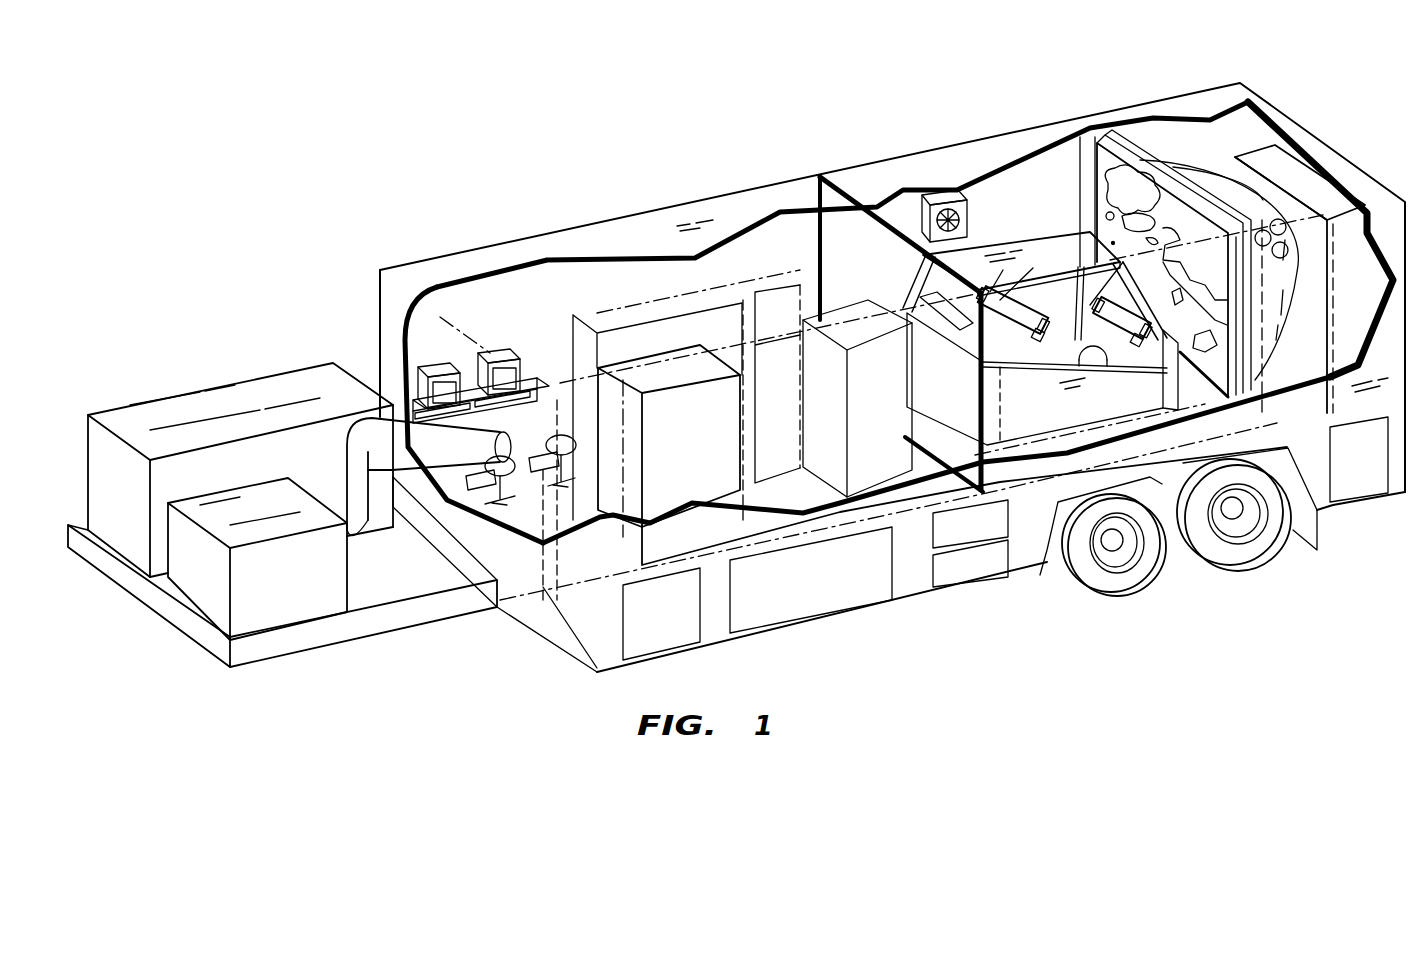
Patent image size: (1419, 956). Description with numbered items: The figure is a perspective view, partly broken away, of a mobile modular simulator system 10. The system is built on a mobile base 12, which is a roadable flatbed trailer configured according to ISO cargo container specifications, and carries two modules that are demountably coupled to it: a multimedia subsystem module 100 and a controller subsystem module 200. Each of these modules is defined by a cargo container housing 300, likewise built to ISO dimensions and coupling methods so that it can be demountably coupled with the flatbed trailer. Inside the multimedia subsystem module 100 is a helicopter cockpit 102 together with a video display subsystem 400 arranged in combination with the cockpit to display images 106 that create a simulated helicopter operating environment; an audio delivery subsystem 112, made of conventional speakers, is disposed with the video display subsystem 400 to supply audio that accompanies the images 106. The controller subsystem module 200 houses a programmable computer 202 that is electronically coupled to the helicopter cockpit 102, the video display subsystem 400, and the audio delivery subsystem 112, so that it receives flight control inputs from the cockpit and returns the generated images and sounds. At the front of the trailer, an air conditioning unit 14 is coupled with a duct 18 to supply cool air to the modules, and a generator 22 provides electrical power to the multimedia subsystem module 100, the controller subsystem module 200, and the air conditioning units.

The mobile modular simulator system 10 is at (378, 183).
The mobile base 12 is at (902, 577).
The air conditioning unit 14 is at (197, 588).
The duct 18 is at (363, 507).
The generator 22 is at (240, 400).
The multimedia subsystem module 100 is at (966, 162).
The helicopter cockpit 102 is at (1053, 253).
The images 106 is at (1097, 172).
The audio delivery subsystem 112 is at (947, 198).
The controller subsystem module 200 is at (600, 240).
The programmable computer 202 is at (657, 375).
The cargo container housing 300 is at (862, 182).
The video display subsystem 400 is at (1148, 168).